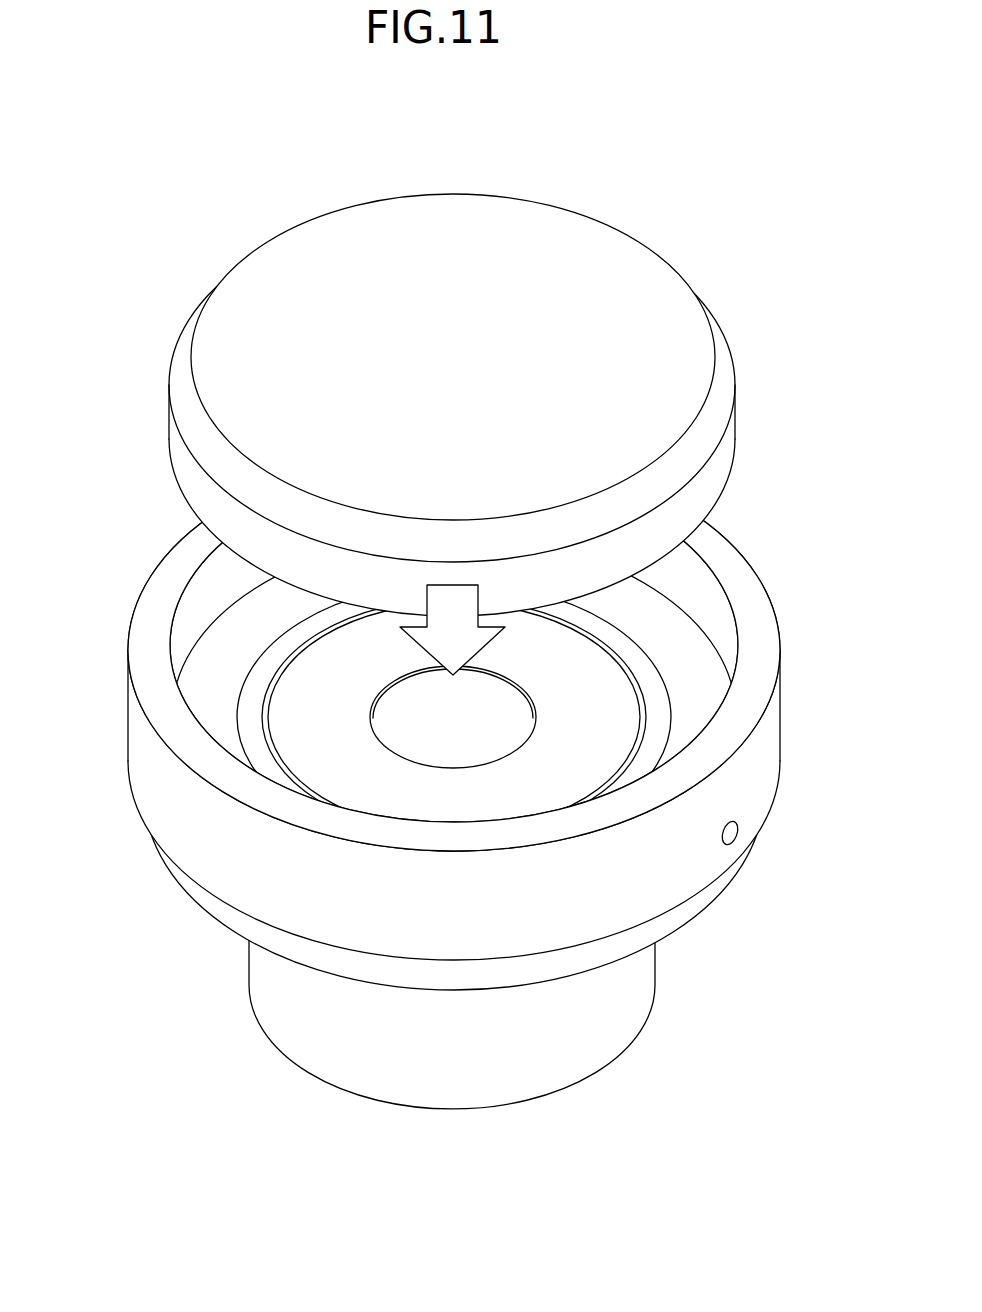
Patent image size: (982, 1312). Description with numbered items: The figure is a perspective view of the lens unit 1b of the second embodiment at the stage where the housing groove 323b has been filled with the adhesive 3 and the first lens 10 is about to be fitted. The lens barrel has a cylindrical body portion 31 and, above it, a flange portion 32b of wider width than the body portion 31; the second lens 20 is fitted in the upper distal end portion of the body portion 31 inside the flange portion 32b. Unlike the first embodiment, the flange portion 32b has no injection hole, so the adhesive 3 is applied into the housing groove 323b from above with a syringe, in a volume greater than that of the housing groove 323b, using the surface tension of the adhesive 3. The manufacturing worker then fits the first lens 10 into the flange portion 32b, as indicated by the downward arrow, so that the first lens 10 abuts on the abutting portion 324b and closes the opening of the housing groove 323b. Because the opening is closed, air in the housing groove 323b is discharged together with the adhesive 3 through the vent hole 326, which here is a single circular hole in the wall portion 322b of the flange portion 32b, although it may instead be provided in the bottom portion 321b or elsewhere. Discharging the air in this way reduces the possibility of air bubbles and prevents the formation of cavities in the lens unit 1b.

The lens unit 1b is at (436, 610).
The first lens 10 is at (562, 233).
The adhesive 3 is at (436, 779).
The flange portion 32b is at (436, 704).
The wall portion 322b is at (128, 743).
The housing groove 323b is at (210, 693).
The abutting portion 324b is at (653, 712).
The second lens 20 is at (604, 712).
The vent hole 326 is at (743, 838).
The bottom portion 321b is at (217, 912).
The body portion 31 is at (274, 1019).